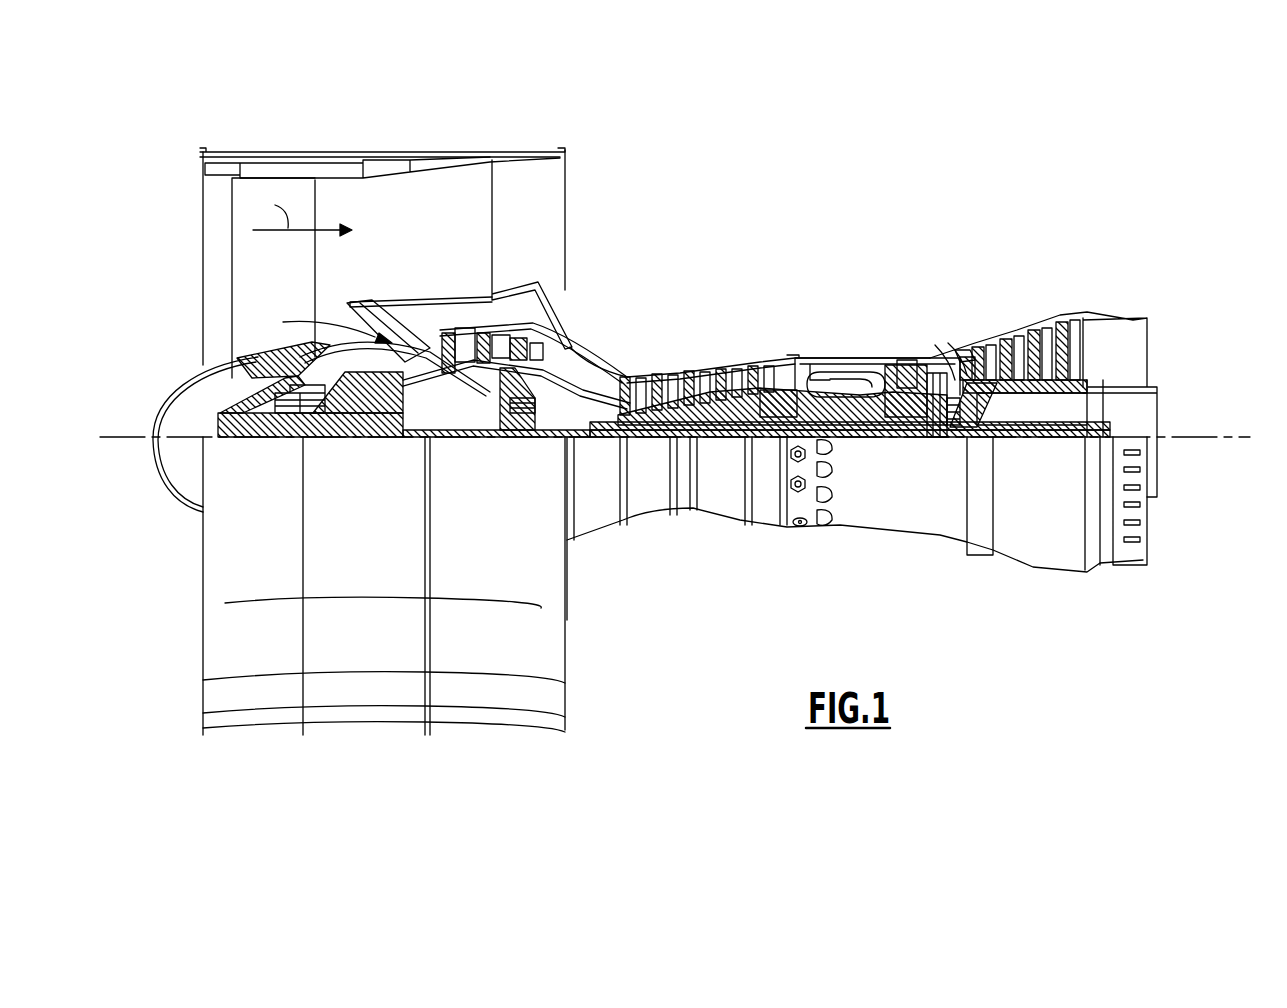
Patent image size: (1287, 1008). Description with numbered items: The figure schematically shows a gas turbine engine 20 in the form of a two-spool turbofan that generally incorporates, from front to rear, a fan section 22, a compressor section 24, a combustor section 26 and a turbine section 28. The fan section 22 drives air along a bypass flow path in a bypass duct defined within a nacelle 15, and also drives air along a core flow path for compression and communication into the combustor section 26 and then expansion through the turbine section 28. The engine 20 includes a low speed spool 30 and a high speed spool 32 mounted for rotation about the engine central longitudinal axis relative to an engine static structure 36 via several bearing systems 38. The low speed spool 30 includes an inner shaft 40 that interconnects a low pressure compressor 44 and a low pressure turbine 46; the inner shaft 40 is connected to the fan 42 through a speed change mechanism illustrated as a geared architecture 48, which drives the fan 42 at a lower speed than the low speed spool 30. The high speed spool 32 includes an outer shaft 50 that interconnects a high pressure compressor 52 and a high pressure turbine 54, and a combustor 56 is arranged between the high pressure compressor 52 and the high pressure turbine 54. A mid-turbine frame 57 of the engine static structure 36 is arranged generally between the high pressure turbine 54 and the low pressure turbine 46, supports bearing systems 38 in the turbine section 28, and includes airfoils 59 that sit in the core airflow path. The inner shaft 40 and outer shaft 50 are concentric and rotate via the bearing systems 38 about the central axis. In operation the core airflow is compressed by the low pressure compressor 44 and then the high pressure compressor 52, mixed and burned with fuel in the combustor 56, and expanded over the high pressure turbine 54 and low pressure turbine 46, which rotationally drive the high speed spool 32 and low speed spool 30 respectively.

The nacelle 15 is at (386, 157).
The gas turbine engine 20 is at (850, 205).
The fan section 22 is at (316, 140).
The compressor section 24 is at (615, 345).
The combustor section 26 is at (840, 332).
The turbine section 28 is at (985, 290).
The low speed spool 30 is at (722, 450).
The high speed spool 32 is at (767, 365).
The engine static structure 36 is at (763, 533).
The bearing systems 38 is at (528, 418).
The inner shaft 40 is at (586, 445).
The fan 42 is at (292, 284).
The low pressure compressor 44 is at (487, 350).
The low pressure turbine 46 is at (1028, 330).
The geared architecture 48 is at (390, 420).
The outer shaft 50 is at (857, 423).
The high pressure compressor 52 is at (697, 373).
The high pressure turbine 54 is at (905, 353).
The combustor 56 is at (838, 358).
The mid-turbine frame 57 is at (950, 340).
The airfoils 59 is at (950, 372).